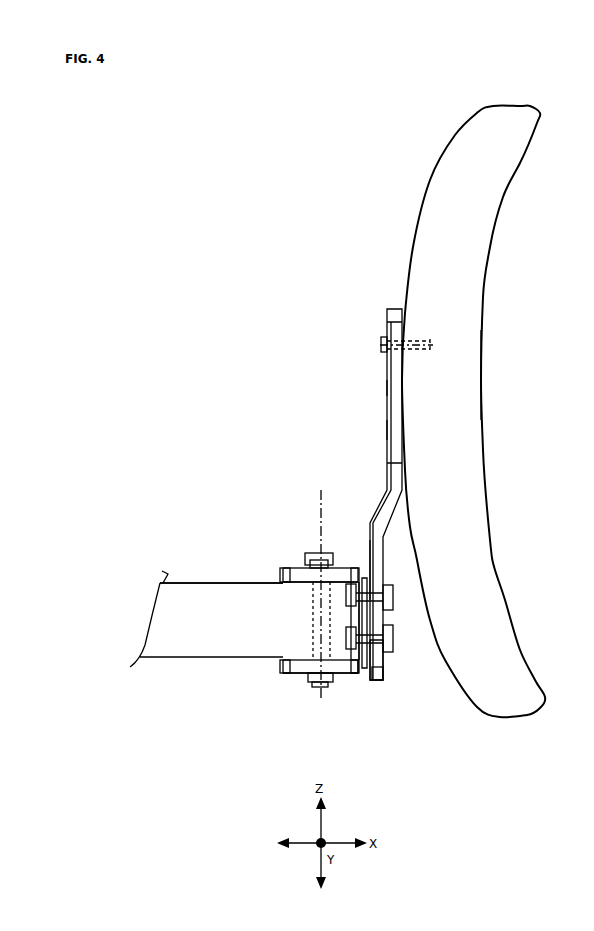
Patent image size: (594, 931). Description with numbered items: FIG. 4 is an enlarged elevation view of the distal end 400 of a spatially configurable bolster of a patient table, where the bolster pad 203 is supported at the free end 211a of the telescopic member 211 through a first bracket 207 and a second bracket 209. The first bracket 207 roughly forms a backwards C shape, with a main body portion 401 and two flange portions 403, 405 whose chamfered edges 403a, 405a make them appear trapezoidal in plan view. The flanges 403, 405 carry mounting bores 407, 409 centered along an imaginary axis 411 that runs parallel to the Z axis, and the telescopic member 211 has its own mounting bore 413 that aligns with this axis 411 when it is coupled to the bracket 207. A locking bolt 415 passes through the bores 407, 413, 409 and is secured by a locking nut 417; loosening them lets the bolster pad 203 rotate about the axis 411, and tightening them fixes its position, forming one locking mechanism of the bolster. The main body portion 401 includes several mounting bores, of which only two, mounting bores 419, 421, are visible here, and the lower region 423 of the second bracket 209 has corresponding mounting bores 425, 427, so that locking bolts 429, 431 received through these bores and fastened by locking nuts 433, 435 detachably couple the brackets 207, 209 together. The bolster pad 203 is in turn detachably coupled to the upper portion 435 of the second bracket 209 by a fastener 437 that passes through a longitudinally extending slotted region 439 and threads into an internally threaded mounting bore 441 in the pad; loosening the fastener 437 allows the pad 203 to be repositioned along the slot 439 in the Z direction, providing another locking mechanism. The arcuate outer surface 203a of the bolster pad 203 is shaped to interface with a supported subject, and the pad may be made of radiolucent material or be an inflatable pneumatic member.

The bolster pad 203 is at (466, 126).
The outer surface 203a is at (483, 396).
The second bracket 209 is at (392, 308).
The fastener 437 is at (380, 344).
The internally threaded mounting bore 441 is at (424, 337).
The slotted region 439 is at (386, 388).
The upper portion 435 is at (391, 428).
The mounting bore 419 is at (372, 565).
The mounting bore 421 is at (372, 682).
The lower region 423 is at (382, 676).
The mounting bore 425 is at (386, 580).
The main body portion 401 is at (350, 620).
The flange portion 403 is at (280, 572).
The chamfered edge 403a is at (288, 580).
The flange portion 405 is at (285, 667).
The chamfered edge 405a is at (292, 674).
The mounting bore 407 is at (304, 567).
The locking bolt 415 is at (312, 553).
The mounting bore 413 is at (330, 560).
The imaginary axis 411 is at (319, 585).
The locking nut 417 is at (312, 683).
The mounting bore 409 is at (324, 687).
The first bracket 207 is at (336, 672).
The locking bolt 429 is at (355, 584).
The mounting bore 427 is at (390, 656).
The locking nut 433 is at (393, 595).
The locking bolt 431 is at (350, 633).
The telescopic member 211 is at (190, 583).
The free end 211a is at (296, 620).
The distal end 400 is at (272, 318).